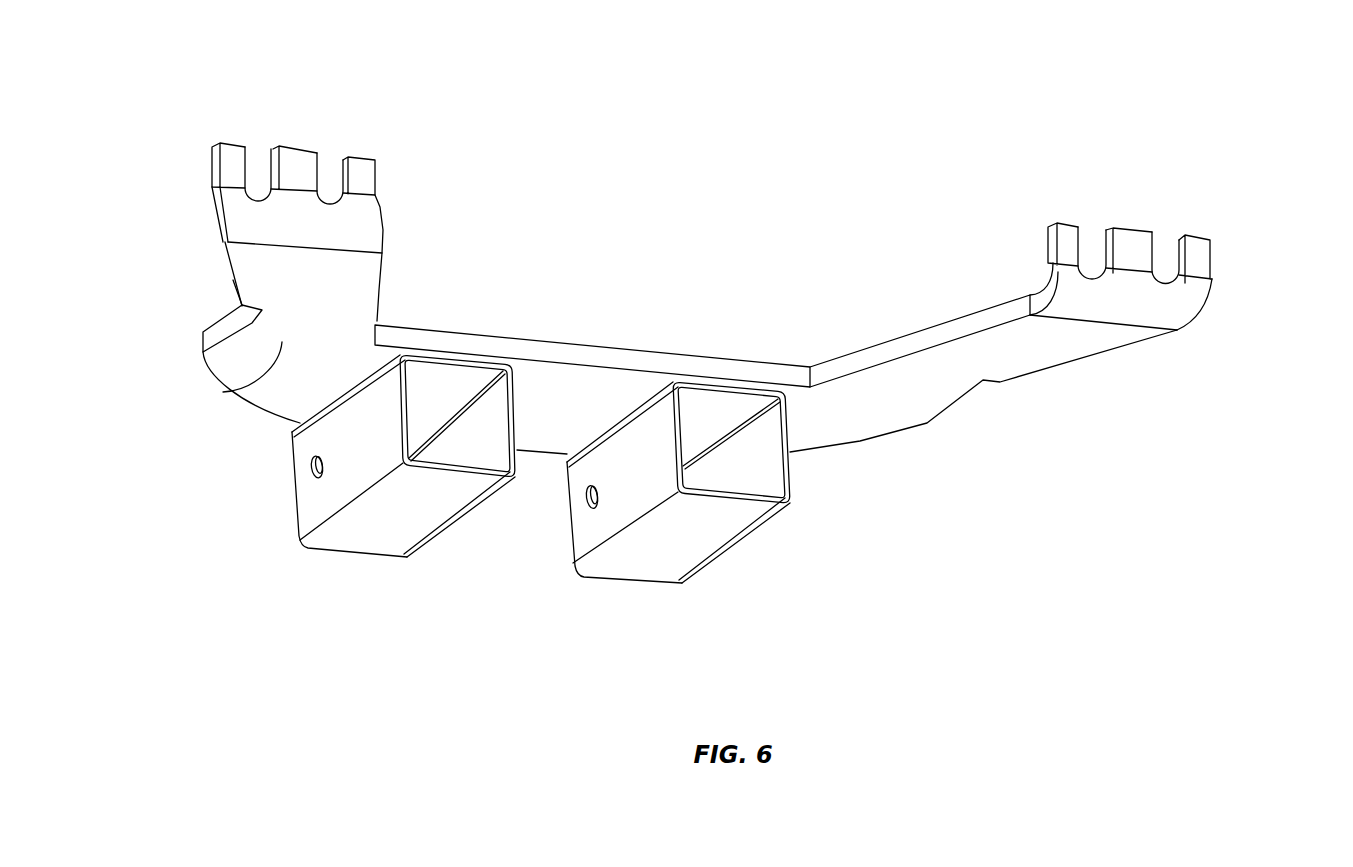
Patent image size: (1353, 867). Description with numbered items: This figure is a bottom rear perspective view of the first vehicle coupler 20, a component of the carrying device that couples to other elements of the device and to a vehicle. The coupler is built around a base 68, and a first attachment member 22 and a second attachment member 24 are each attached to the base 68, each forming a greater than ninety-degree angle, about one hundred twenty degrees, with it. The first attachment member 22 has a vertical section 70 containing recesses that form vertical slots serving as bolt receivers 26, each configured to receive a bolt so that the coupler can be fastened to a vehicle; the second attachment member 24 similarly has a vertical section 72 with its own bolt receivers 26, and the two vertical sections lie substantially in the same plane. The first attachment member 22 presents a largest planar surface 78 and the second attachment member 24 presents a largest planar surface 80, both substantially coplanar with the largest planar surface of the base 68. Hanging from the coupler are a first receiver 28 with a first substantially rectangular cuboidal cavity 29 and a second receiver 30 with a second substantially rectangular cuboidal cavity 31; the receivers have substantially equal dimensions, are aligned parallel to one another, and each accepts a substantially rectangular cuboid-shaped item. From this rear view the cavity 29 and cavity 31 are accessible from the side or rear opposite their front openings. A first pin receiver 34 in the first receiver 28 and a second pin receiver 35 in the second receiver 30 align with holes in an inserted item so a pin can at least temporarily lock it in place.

The first vehicle coupler 20 is at (1218, 95).
The first attachment member 22 is at (910, 343).
The second attachment member 24 is at (380, 293).
The bolt receivers 26 is at (260, 198).
The first receiver 28 is at (683, 552).
The first substantially rectangular cuboidal cavity 29 is at (764, 488).
The second receiver 30 is at (417, 532).
The second substantially rectangular cuboidal cavity 31 is at (484, 462).
The first pin receiver 34 is at (585, 500).
The second pin receiver 35 is at (305, 478).
The base 68 is at (590, 352).
The vertical section 70 is at (1213, 258).
The vertical section 72 is at (383, 188).
The largest planar surface 78 is at (1008, 353).
The largest planar surface 80 is at (223, 390).